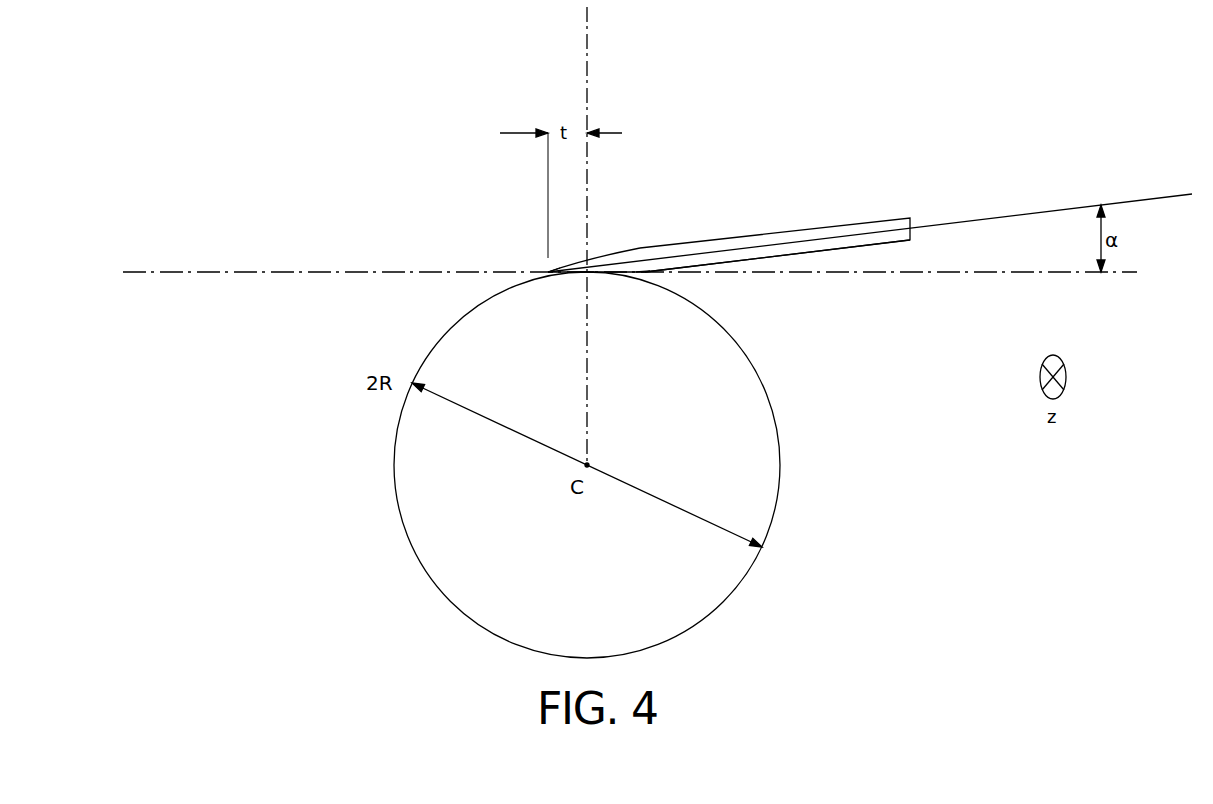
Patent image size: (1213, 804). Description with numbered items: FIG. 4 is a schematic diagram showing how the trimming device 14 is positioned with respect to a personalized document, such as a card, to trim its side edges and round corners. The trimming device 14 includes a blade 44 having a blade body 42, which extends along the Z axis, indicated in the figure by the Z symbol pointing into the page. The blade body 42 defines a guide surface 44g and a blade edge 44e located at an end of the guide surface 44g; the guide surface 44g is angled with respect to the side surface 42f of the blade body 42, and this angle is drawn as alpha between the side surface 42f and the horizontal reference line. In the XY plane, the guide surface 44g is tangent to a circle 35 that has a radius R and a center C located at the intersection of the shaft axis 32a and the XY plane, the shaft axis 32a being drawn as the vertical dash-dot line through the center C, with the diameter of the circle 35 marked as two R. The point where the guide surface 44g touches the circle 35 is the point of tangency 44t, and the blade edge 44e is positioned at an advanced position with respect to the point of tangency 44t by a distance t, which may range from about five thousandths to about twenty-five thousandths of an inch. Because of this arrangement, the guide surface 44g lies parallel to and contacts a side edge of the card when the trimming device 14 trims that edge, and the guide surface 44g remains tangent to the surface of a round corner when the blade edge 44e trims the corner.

The trimming device 14 is at (870, 193).
The blade body 42 is at (775, 233).
The side surface 42f is at (815, 256).
The blade 44 is at (633, 236).
The blade edge 44e is at (540, 270).
The point of tangency 44t is at (590, 274).
The guide surface 44g is at (641, 279).
The circle 35 is at (733, 339).
The shaft axis 32a is at (590, 464).